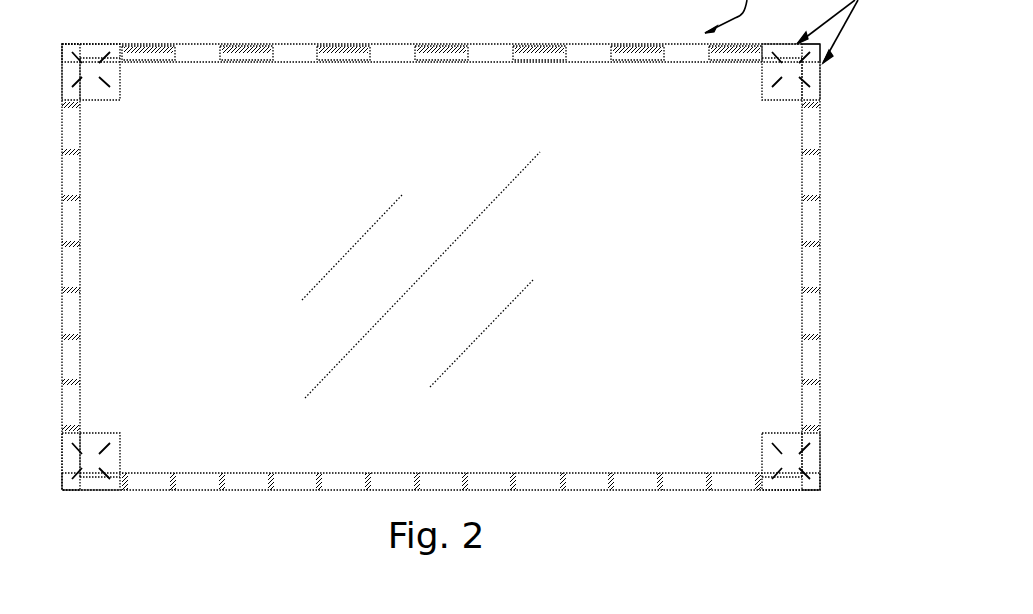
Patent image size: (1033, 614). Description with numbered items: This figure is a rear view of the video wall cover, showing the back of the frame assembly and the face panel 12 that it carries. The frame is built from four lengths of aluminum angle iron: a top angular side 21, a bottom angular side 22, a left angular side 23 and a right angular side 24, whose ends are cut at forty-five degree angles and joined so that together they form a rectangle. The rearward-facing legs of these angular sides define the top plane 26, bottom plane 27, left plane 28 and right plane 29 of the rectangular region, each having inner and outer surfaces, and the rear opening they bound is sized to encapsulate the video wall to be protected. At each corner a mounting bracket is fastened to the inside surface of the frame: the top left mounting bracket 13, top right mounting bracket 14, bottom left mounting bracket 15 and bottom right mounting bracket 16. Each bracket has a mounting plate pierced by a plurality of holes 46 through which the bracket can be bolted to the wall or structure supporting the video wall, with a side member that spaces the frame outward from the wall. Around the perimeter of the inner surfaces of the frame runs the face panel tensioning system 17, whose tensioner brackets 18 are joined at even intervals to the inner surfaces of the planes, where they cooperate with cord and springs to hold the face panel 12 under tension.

The face panel 12 is at (518, 195).
The top left mounting bracket 13 is at (787, 90).
The top right mounting bracket 14 is at (96, 88).
The bottom left mounting bracket 15 is at (787, 447).
The bottom right mounting bracket 16 is at (97, 443).
The face panel tensioning system 17 is at (230, 50).
The tensioner brackets 18 is at (62, 382).
The top angular side 21 is at (190, 50).
The bottom angular side 22 is at (163, 483).
The left angular side 23 is at (806, 122).
The right angular side 24 is at (70, 122).
The top plane 26 is at (532, 44).
The bottom plane 27 is at (400, 490).
The left plane 28 is at (820, 152).
The right plane 29 is at (62, 152).
The holes 46 is at (441, 265).